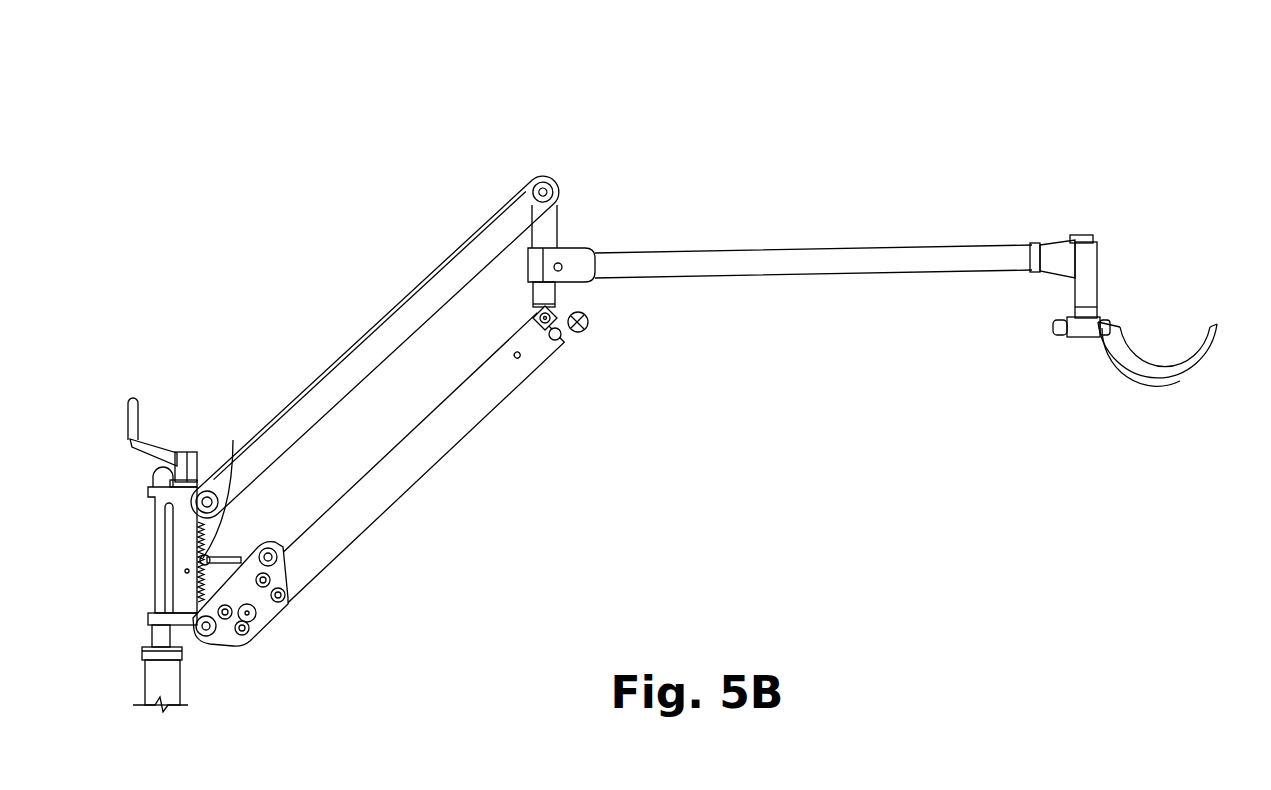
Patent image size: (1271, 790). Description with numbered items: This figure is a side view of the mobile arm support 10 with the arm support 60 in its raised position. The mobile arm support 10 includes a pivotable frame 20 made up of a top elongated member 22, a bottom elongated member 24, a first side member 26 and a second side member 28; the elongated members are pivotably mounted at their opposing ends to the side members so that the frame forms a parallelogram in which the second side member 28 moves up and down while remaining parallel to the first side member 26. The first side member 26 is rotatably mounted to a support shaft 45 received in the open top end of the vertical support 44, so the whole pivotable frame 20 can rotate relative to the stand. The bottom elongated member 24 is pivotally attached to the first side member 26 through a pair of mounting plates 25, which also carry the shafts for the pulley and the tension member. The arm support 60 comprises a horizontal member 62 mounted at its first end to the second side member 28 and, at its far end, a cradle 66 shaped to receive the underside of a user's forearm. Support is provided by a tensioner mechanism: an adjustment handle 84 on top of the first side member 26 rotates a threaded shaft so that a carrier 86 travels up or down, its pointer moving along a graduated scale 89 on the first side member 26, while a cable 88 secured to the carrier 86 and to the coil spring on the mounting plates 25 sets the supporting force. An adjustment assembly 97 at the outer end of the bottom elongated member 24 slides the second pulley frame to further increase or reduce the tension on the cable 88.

The mobile arm support 10 is at (394, 105).
The pivotable frame 20 is at (513, 429).
The top elongated member 22 is at (350, 352).
The bottom elongated member 24 is at (421, 486).
The mounting plates 25 is at (258, 626).
The first side member 26 is at (183, 588).
The second side member 28 is at (560, 232).
The vertical support 44 is at (147, 690).
The support shaft 45 is at (155, 558).
The arm support 60 is at (923, 336).
The horizontal member 62 is at (843, 243).
The cradle 66 is at (1212, 371).
The adjustment handle 84 is at (139, 412).
The carrier 86 is at (233, 441).
The cable 88 is at (236, 556).
The graduated scale 89 is at (192, 532).
The adjustment assembly 97 is at (590, 329).